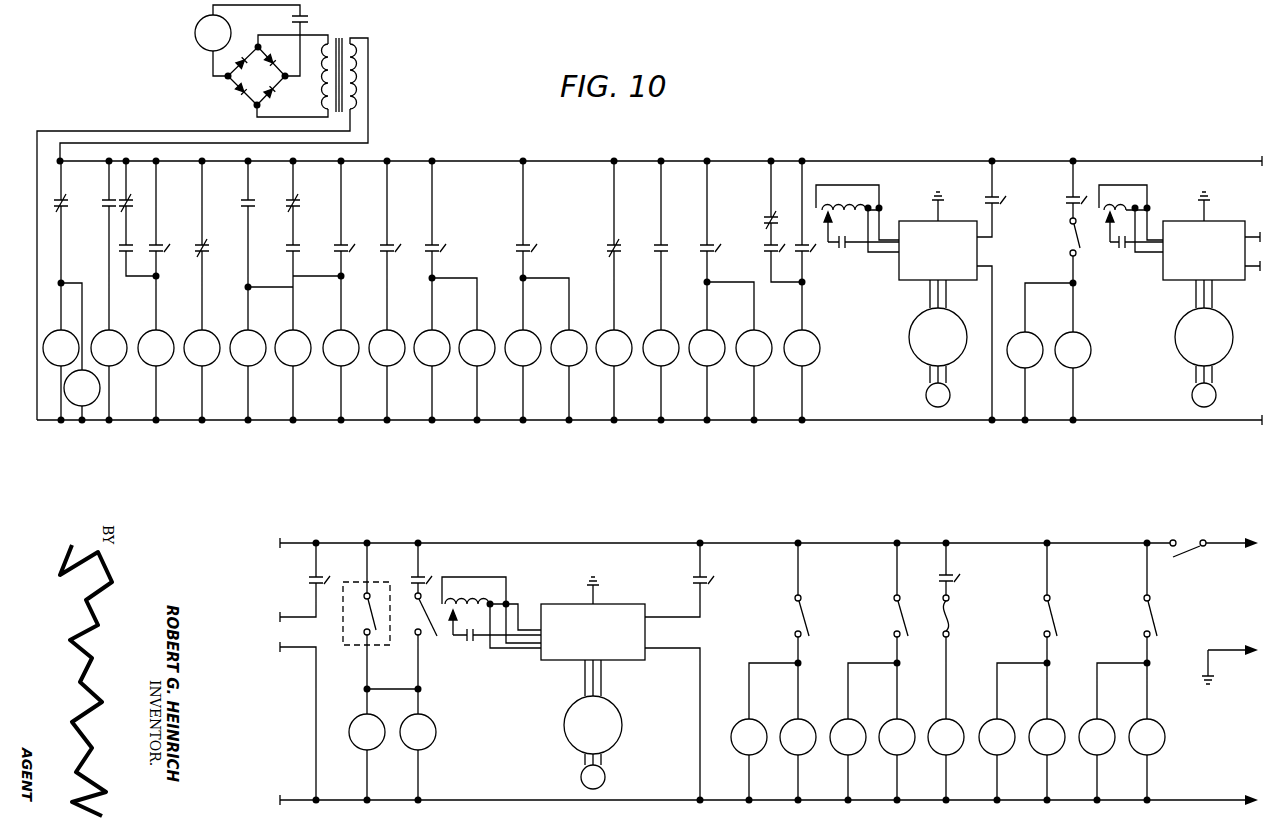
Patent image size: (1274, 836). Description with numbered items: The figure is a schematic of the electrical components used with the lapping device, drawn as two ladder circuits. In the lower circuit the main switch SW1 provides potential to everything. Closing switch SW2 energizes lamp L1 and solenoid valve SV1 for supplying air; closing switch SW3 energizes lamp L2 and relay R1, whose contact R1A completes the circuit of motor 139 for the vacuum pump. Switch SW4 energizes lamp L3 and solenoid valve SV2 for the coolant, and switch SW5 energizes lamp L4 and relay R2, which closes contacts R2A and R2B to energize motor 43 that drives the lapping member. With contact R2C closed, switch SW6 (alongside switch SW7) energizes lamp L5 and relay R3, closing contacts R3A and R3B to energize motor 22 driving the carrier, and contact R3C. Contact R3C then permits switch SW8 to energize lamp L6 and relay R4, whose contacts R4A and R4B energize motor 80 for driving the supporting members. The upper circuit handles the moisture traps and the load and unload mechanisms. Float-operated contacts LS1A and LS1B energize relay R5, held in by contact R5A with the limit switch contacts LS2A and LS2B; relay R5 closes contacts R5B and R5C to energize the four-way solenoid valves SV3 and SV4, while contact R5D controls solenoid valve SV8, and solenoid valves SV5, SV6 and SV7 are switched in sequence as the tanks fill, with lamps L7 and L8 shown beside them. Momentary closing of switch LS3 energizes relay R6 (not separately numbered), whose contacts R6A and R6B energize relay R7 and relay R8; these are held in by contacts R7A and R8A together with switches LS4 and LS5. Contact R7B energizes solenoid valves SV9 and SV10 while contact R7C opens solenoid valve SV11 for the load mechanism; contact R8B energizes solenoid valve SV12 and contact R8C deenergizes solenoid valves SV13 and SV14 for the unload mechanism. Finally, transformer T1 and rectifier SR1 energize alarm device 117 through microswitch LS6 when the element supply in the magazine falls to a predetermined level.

The alarm device 117 is at (194, 34).
The microswitch LS6 is at (309, 18).
The rectifier SR1 is at (252, 104).
The transformer T1 is at (363, 60).
The contact of relay R8 R8B is at (106, 200).
The contact of relay R8 R8C is at (66, 208).
The contact of relay R8 R8A is at (118, 247).
The switch LS5 is at (132, 205).
The contact of relay R6 R6B is at (162, 253).
The contact of relay R7 R7C is at (207, 252).
The contact of relay R7 R7B is at (241, 201).
The switch LS4 is at (296, 199).
The contact of relay R7 R7A is at (286, 246).
The contact of relay R6 R6A is at (348, 246).
The switch LS3 is at (398, 240).
The contact of relay R5 R5D is at (438, 246).
The contact of relay R5 R5C is at (529, 248).
The contact of limit switch LS2 LS2B is at (612, 244).
The contact of limit switch LS1 LS1B is at (665, 244).
The contact of relay R5 R5B is at (713, 251).
The contact of limit switch LS2 LS2A is at (766, 219).
The contact of relay R5 R5A is at (768, 252).
The contact of limit switch LS1 LS1A is at (806, 253).
The contact of relay R4 R4B is at (848, 251).
The motor 80 is at (938, 299).
The contact of relay R4 R4A is at (1010, 189).
The contact of relay R3 R3C is at (1082, 197).
The switch SW8 is at (1067, 244).
The contact of relay R3 R3B is at (1121, 250).
The motor 22 is at (1211, 299).
The solenoid valve SV14 is at (61, 348).
The solenoid valve SV13 is at (82, 388).
The solenoid valve SV12 is at (109, 348).
The relay R8 is at (156, 348).
The solenoid valve SV11 is at (202, 348).
The solenoid valve SV10 is at (248, 348).
The solenoid valve SV9 is at (317, 348).
The relay R7 is at (387, 348).
The solenoid valve SV8 is at (432, 348).
The lamp L8 is at (477, 348).
The solenoid valve SV7 is at (523, 348).
The lamp L7 is at (569, 348).
The solenoid valve SV6 is at (614, 348).
The solenoid valve SV5 is at (661, 348).
The four-way solenoid valve SV4 is at (707, 348).
The four-way solenoid valve SV3 is at (754, 348).
The relay R5 is at (802, 348).
The relay R4 is at (1025, 350).
The lamp L6 is at (1073, 350).
The contact of relay R3 R3A is at (338, 569).
The switch SW7 is at (356, 620).
The contact of relay R2 R2C is at (438, 569).
The switch SW6 is at (433, 626).
The contact of relay R2 R2B is at (468, 646).
The motor 43 is at (593, 683).
The contact of relay R2 R2A is at (707, 577).
The switch SW5 is at (795, 620).
The switch SW4 is at (894, 620).
The contact of relay R1 R1A is at (955, 577).
The switch SW3 is at (1053, 622).
The switch SW2 is at (1153, 622).
The main switch SW1 is at (1182, 557).
The relay R3 is at (367, 732).
The lamp L5 is at (418, 732).
The relay R2 is at (749, 737).
The lamp L4 is at (798, 737).
The solenoid valve SV2 is at (848, 737).
The lamp L3 is at (897, 737).
The motor 139 is at (946, 675).
The relay R1 is at (997, 737).
The lamp L2 is at (1047, 737).
The solenoid valve SV1 is at (1097, 737).
The lamp L1 is at (1147, 737).